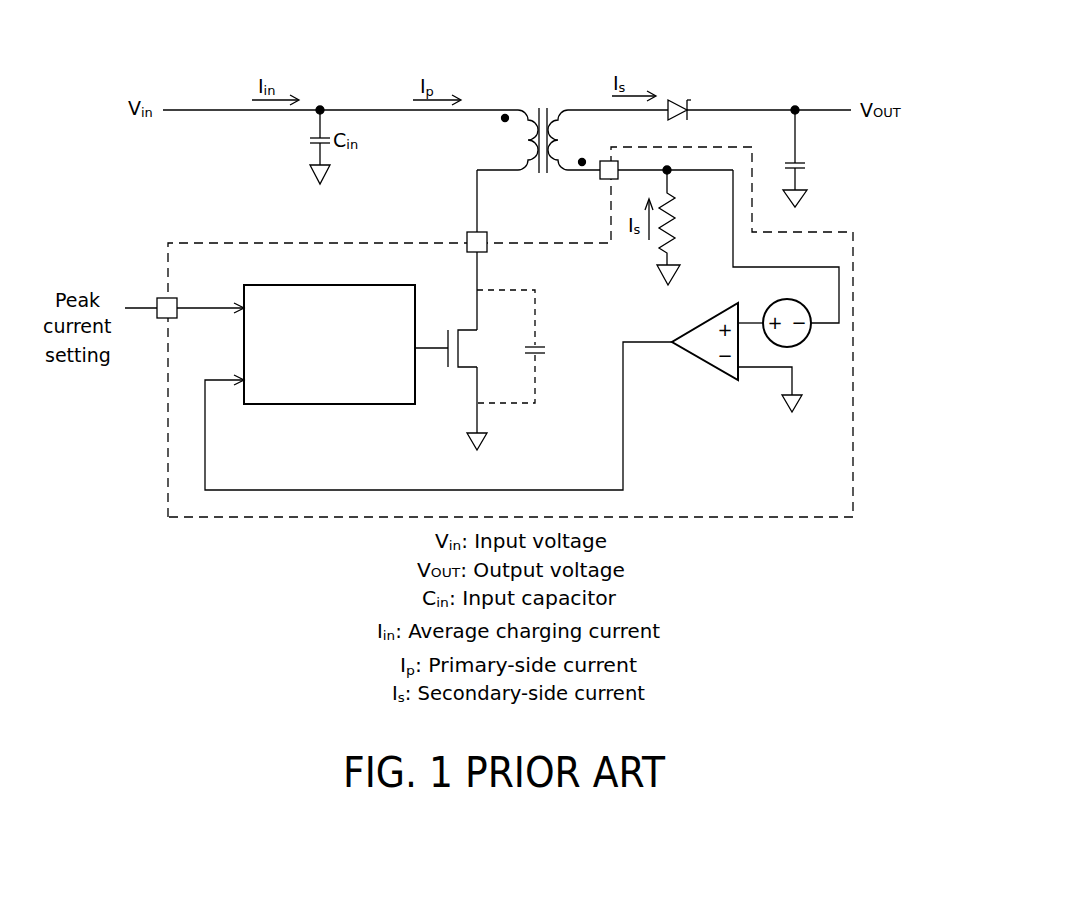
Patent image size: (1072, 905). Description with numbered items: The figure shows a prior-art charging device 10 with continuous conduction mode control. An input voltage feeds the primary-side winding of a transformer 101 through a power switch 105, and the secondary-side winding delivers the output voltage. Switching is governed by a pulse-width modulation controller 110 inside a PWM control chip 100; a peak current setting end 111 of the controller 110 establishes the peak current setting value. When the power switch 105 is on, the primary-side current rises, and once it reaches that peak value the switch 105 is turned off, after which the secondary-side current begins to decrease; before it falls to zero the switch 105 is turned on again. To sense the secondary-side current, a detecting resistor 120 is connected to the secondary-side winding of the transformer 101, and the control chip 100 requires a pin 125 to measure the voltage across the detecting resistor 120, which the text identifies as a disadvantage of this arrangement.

The charging device 10 is at (961, 100).
The PWM control chip 100 is at (853, 403).
The transformer 101 is at (538, 136).
The power switch 105 is at (466, 369).
The pulse-width modulation (PWM) controller 110 is at (323, 405).
The peak current setting end 111 is at (198, 307).
The detecting resistor 120 is at (675, 236).
The pin 125 is at (606, 181).